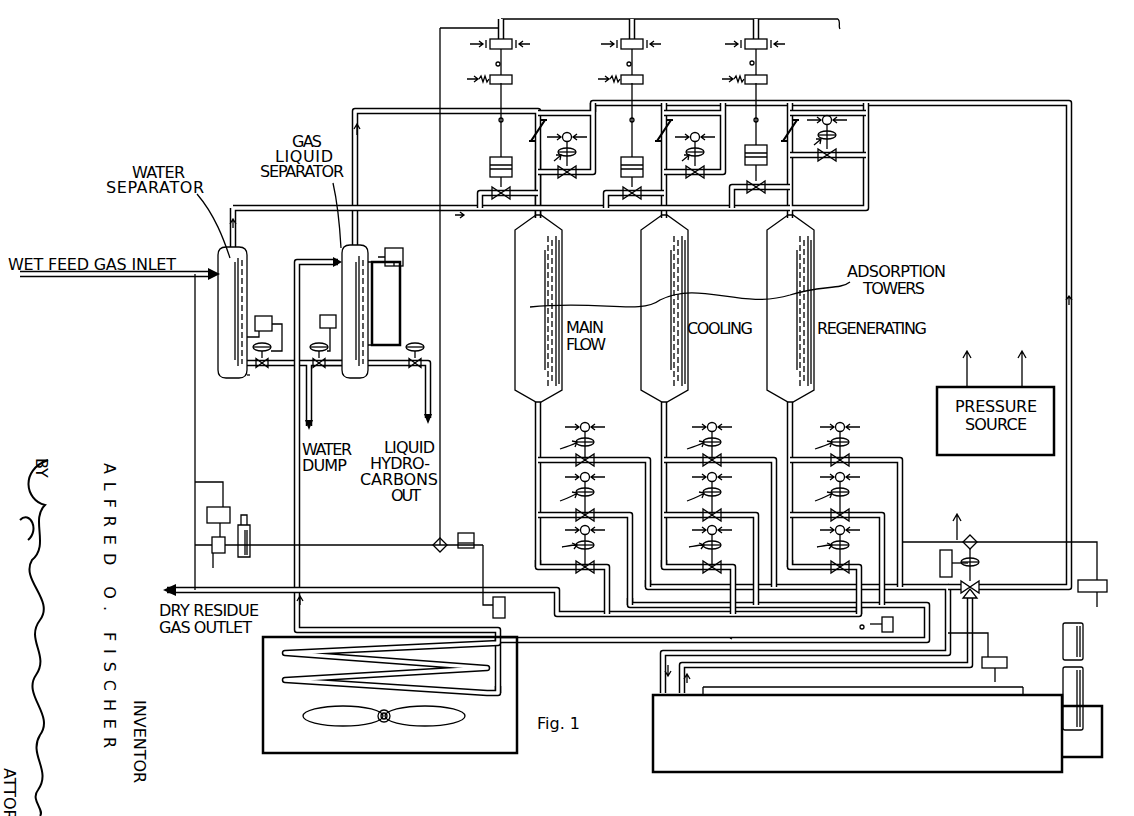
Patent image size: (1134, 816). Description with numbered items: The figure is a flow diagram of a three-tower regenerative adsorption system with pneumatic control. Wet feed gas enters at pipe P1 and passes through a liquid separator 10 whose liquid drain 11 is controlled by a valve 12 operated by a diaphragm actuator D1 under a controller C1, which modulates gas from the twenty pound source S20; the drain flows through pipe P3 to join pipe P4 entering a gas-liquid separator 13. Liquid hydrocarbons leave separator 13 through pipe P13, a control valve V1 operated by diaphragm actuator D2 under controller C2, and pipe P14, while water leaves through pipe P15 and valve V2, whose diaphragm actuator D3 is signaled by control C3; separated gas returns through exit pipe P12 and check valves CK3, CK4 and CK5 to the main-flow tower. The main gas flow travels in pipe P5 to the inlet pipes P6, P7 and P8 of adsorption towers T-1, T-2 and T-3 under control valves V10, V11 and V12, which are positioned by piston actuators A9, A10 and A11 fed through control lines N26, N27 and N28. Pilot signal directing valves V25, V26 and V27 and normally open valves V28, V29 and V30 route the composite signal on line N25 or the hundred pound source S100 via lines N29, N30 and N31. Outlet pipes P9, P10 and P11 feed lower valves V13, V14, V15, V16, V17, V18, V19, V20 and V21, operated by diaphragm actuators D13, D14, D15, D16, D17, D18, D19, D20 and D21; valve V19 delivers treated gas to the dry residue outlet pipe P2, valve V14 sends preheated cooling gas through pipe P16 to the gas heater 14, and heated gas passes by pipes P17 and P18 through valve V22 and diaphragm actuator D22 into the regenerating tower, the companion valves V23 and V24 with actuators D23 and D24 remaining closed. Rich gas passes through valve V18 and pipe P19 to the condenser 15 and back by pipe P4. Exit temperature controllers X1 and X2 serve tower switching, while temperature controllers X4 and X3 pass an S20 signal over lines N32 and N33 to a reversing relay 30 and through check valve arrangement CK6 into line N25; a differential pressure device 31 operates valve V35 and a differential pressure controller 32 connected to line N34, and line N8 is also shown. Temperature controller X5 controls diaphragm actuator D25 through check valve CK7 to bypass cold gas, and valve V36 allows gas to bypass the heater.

The wet feed gas inlet pipe P1 is at (90, 278).
The liquid separator 10 is at (236, 288).
The liquid drain 11 is at (250, 378).
The drain valve 12 is at (261, 373).
The controller C1 is at (269, 309).
The diaphragm actuator D1 is at (268, 345).
The 20 pound pressure source S20 is at (405, 268).
The liquid drain pipe P3 is at (298, 374).
The water discharge valve V2 is at (319, 371).
The water level control C3 is at (321, 318).
The diaphragm actuator D3 is at (311, 346).
The gas-liquid separator 13 is at (360, 253).
The controller C2 is at (398, 250).
The diaphragm actuator D2 is at (415, 343).
The control valve V1 is at (414, 371).
The liquid hydrocarbon discharge pipe P13 is at (383, 374).
The liquid hydrocarbon outlet pipe P14 is at (426, 402).
The water discharge pipe P15 is at (333, 374).
The main flow gas pipe P5 is at (306, 211).
The separator gas exit pipe P12 is at (361, 184).
The tower T1 inlet pipe P6 is at (538, 210).
The tower T2 inlet pipe P7 is at (666, 209).
The tower T3 inlet pipe P8 is at (791, 207).
The heated gas delivery pipe P18 is at (908, 105).
The composite signal line N25 is at (445, 28).
The control line N26 is at (500, 121).
The control line N27 is at (632, 122).
The control line N28 is at (756, 122).
The control line N29 is at (497, 63).
The control line N30 is at (628, 63).
The control line N31 is at (750, 61).
The 100 pound pressure source S100 is at (773, 203).
The signal directing valve V25 is at (512, 49).
The signal directing valve V26 is at (643, 49).
The signal directing valve V27 is at (767, 49).
The normally open valve V28 is at (512, 84).
The normally open valve V29 is at (643, 83).
The normally open valve V30 is at (767, 83).
The check valve CK3 is at (525, 131).
The check valve CK4 is at (652, 131).
The check valve CK5 is at (778, 131).
The piston actuator A9 is at (490, 170).
The piston actuator A10 is at (621, 165).
The piston actuator A11 is at (745, 160).
The control valve V10 is at (492, 193).
The control valve V11 is at (630, 202).
The control valve V12 is at (761, 195).
The diaphragm actuator D24 is at (580, 150).
The diaphragm actuator D23 is at (718, 123).
The diaphragm actuator D22 is at (836, 141).
The heated gas valve V24 is at (566, 176).
The heated gas valve V23 is at (694, 177).
The heated gas valve V22 is at (832, 159).
The adsorption tower T-1 is at (538, 308).
The adsorption tower T-2 is at (664, 308).
The adsorption tower T-3 is at (790, 308).
The tower T1 outlet pipe P9 is at (535, 413).
The tower T2 outlet pipe P10 is at (660, 412).
The tower T3 outlet pipe P11 is at (797, 411).
The diaphragm actuator D13 is at (596, 441).
The diaphragm actuator D14 is at (722, 440).
The diaphragm actuator D15 is at (851, 441).
The diaphragm actuator D16 is at (596, 492).
The diaphragm actuator D17 is at (723, 492).
The diaphragm actuator D18 is at (851, 492).
The diaphragm actuator D19 is at (582, 549).
The diaphragm actuator D20 is at (709, 549).
The diaphragm actuator D21 is at (837, 549).
The lower tower valve V13 is at (594, 459).
The lower tower valve V14 is at (719, 459).
The lower tower valve V15 is at (847, 459).
The lower tower valve V16 is at (589, 514).
The lower tower valve V17 is at (717, 514).
The lower tower valve V18 is at (843, 514).
The lower tower valve V19 is at (591, 564).
The lower tower valve V20 is at (718, 564).
The lower tower valve V21 is at (846, 564).
The dry residue gas outlet pipe P2 is at (393, 592).
The two-phase pipe P4 is at (297, 481).
The cooling gas pipe P16 is at (710, 586).
The heater outlet pipe P17 is at (775, 668).
The rich gas pipe P19 is at (577, 644).
The signal line N32 is at (731, 639).
The signal line N33 is at (484, 576).
The signal line N34 is at (371, 544).
The pneumatic line N8 is at (860, 627).
The exit temperature controller X1 is at (894, 621).
The exit temperature controller X2 is at (940, 563).
The temperature controller X3 is at (507, 605).
The temperature controller X4 is at (1000, 656).
The temperature controller X5 is at (1101, 581).
The dual check valve arrangement CK6 is at (434, 549).
The check valve CK7 is at (977, 540).
The diaphragm actuator D25 is at (980, 560).
The heater bypass valve V36 is at (980, 585).
The reversing relay 30 is at (469, 533).
The differential pressure responsive device 31 is at (231, 510).
The differential pressure controller 32 is at (251, 539).
The valve V35 is at (226, 553).
The gas heater 14 is at (966, 753).
The condenser 15 is at (505, 740).